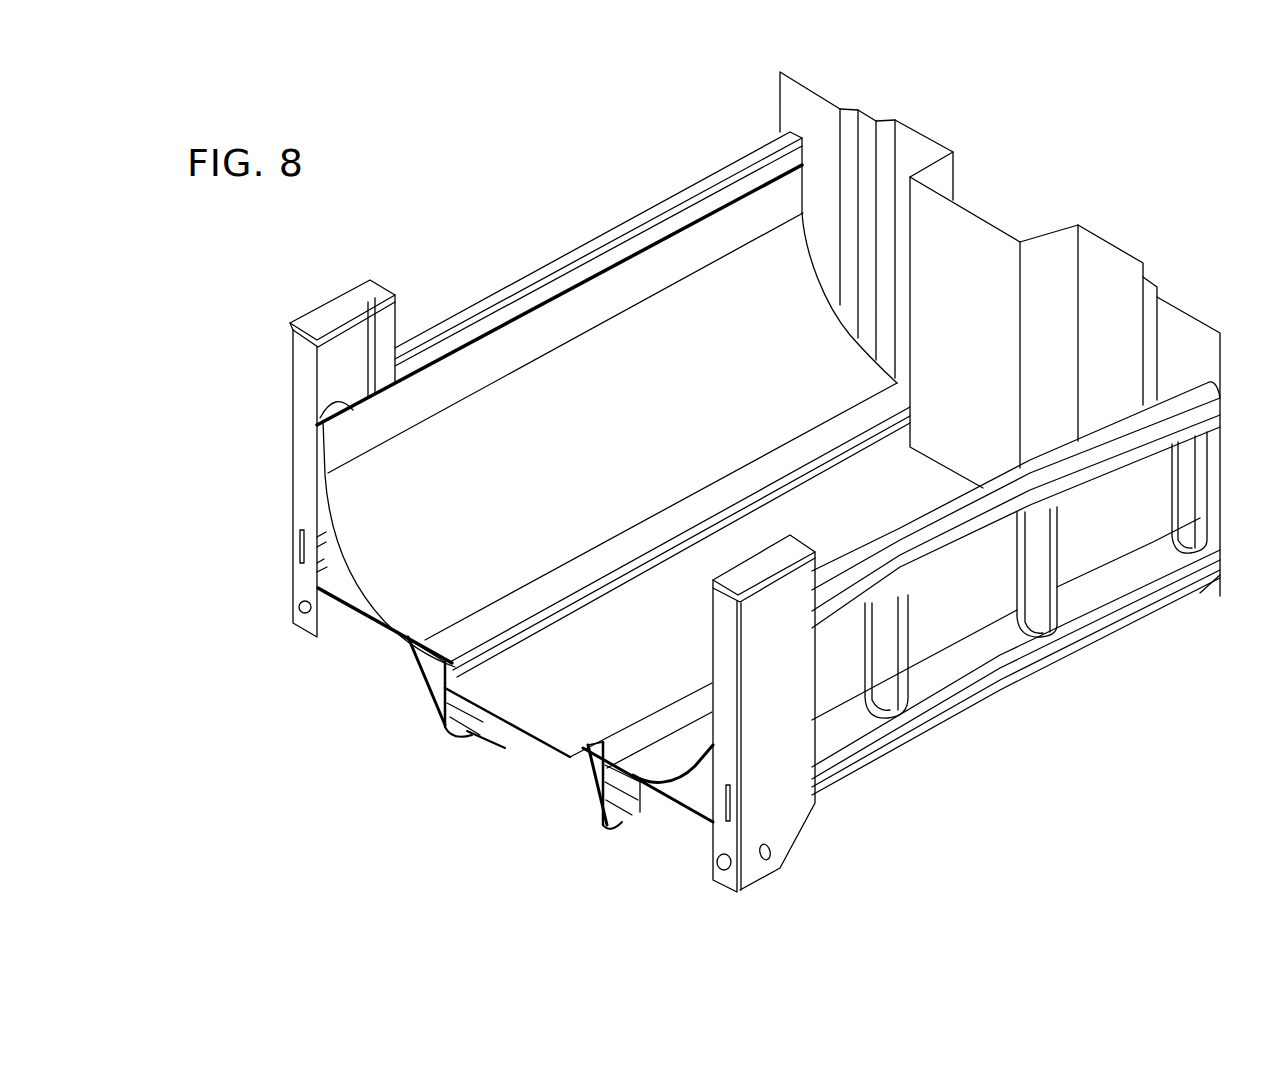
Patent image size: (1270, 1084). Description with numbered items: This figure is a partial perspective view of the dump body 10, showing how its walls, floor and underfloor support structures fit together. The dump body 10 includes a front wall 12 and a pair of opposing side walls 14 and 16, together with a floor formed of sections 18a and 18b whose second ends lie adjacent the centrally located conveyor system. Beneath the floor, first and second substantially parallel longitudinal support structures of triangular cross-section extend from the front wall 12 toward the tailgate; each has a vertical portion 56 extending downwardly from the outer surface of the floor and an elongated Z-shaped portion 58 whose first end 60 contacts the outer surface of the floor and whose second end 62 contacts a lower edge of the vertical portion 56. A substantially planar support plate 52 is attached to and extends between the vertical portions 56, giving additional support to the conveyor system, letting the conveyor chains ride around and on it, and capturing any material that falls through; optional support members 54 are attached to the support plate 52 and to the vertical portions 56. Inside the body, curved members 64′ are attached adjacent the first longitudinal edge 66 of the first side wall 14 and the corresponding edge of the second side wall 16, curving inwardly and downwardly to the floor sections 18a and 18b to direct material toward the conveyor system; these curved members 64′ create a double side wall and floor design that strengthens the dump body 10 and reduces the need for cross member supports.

The dump body 10 is at (473, 157).
The front wall 12 is at (1088, 245).
The first side wall 14 is at (433, 327).
The second side wall 16 is at (975, 617).
The floor section 18a is at (362, 608).
The floor section 18b is at (693, 812).
The substantially planar support plate 52 is at (570, 702).
The support member 54 is at (470, 733).
The vertical portion 56 is at (467, 682).
The elongated Z-shaped portion 58 is at (435, 692).
The first end 60 is at (409, 640).
The second end 62 is at (453, 730).
The curved member 64′ is at (413, 542).
The first longitudinal edge 66 is at (605, 260).